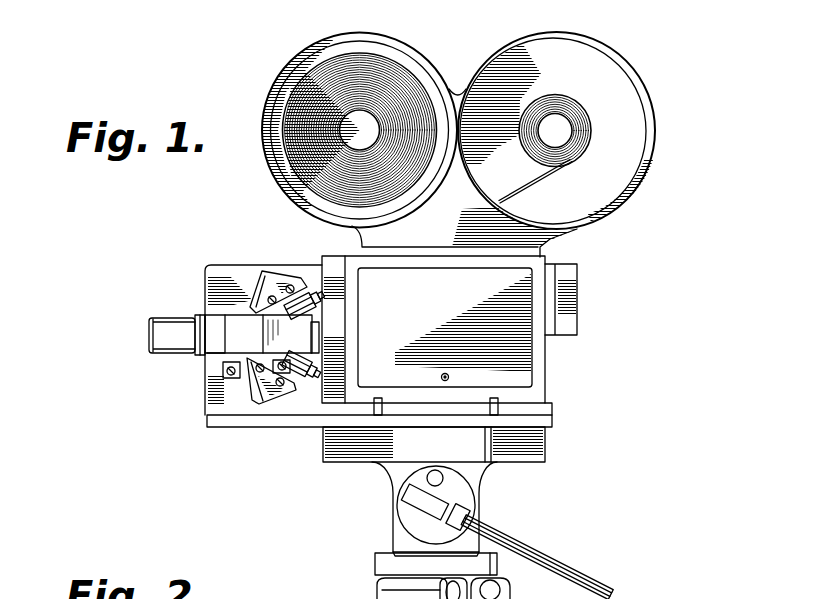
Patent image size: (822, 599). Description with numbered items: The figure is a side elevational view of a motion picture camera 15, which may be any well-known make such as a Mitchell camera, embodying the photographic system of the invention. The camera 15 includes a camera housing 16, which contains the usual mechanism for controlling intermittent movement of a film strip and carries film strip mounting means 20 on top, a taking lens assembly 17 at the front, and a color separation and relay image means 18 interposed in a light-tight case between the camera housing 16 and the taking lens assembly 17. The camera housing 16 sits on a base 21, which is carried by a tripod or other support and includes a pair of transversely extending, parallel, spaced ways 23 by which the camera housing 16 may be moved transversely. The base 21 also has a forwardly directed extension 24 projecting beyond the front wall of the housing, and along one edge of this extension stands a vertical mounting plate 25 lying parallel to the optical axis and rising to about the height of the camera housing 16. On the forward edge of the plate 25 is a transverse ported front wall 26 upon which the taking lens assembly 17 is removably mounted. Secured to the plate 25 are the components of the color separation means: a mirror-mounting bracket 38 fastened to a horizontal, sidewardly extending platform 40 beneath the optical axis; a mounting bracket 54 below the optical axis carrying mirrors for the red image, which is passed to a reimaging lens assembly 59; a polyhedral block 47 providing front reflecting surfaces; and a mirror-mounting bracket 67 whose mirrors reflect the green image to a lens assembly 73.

The camera 15 is at (612, 286).
The camera housing 16 is at (550, 378).
The taking lens assembly 17 is at (165, 312).
The color separation and relay image means 18 is at (243, 292).
The film strip mounting means 20 is at (656, 118).
The base 21 is at (552, 419).
The ways 23 is at (381, 408).
The forwardly directed extension 24 is at (223, 425).
The mounting plate 25 is at (210, 282).
The front wall 26 is at (203, 357).
The mirror-mounting bracket 38 is at (297, 337).
The platform 40 is at (227, 357).
The polyhedral block 47 is at (318, 346).
The mounting bracket 54 is at (248, 389).
The reimaging lens assembly 59 is at (314, 369).
The mirror-mounting bracket 67 is at (301, 268).
The lens assembly 73 is at (320, 301).